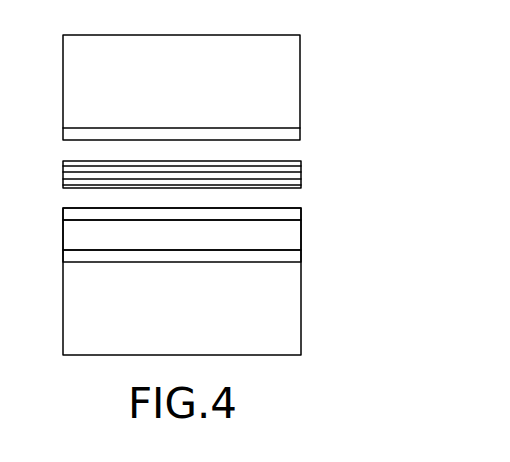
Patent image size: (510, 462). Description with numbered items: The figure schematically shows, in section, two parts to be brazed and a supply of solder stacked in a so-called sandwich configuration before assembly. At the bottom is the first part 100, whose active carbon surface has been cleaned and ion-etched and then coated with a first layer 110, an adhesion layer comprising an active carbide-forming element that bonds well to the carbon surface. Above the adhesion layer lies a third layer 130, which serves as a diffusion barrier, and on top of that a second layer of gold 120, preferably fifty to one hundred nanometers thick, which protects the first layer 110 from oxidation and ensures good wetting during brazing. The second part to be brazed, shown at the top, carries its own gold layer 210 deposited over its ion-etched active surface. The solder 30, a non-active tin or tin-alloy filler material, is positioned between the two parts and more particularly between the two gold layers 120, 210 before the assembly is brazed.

The gold layer 210 is at (293, 59).
The solder 30 is at (293, 175).
The first part 100 is at (293, 323).
The first layer 110 is at (293, 257).
The second layer of gold 120 is at (293, 217).
The third layer 130 is at (293, 232).